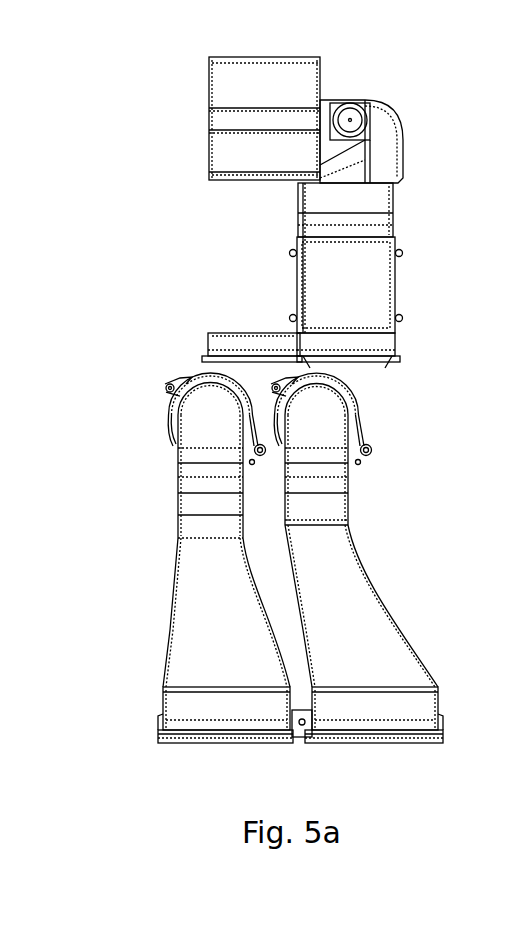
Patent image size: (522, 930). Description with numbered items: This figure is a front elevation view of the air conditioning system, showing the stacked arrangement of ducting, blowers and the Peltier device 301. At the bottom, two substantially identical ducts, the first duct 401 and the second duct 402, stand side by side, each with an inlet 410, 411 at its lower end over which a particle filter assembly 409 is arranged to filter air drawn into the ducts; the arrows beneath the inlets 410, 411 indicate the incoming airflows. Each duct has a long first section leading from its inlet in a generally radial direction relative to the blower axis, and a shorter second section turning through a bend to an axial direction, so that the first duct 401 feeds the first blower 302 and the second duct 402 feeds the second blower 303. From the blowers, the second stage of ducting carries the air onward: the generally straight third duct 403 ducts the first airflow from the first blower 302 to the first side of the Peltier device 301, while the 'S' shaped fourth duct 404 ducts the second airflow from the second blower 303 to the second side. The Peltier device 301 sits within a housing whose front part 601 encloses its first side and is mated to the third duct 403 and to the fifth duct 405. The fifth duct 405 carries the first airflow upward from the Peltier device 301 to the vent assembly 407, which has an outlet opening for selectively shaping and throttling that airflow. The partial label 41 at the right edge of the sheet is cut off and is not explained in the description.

The vent assembly 407 is at (232, 90).
The fifth duct 405 is at (375, 198).
The Peltier device 301 is at (398, 285).
The front part of housing 601 is at (364, 300).
The third duct 403 is at (370, 348).
The fourth duct 404 is at (222, 340).
The second blower 303 is at (176, 390).
The first blower 302 is at (358, 386).
The second duct 402 is at (200, 610).
The first duct 401 is at (362, 597).
The duct 41 is at (512, 598).
The particle filter assembly 409 is at (436, 739).
The inlet of second duct 411 is at (229, 757).
The inlet of first duct 410 is at (377, 757).